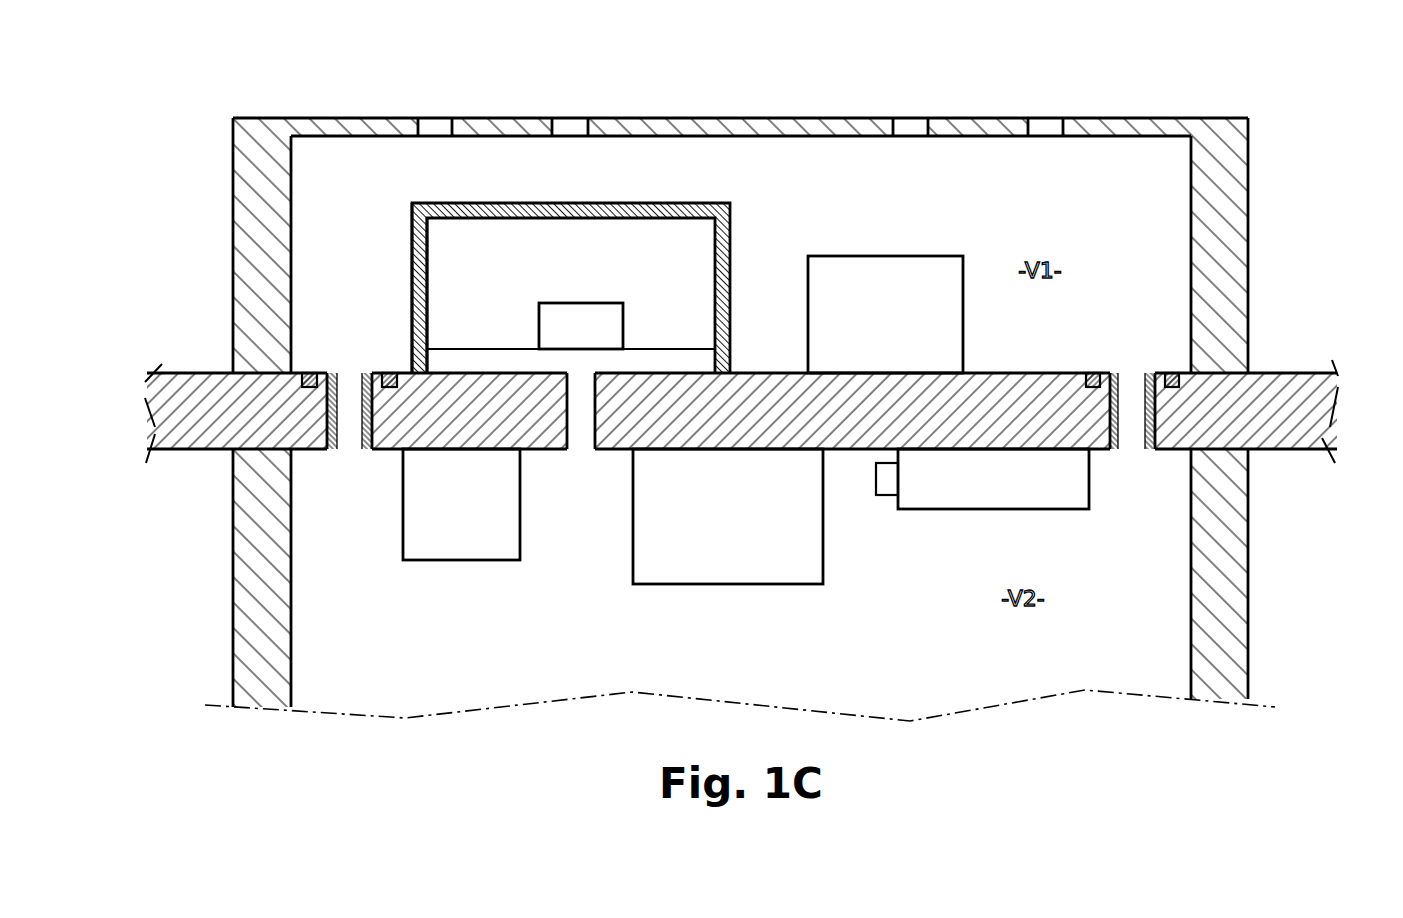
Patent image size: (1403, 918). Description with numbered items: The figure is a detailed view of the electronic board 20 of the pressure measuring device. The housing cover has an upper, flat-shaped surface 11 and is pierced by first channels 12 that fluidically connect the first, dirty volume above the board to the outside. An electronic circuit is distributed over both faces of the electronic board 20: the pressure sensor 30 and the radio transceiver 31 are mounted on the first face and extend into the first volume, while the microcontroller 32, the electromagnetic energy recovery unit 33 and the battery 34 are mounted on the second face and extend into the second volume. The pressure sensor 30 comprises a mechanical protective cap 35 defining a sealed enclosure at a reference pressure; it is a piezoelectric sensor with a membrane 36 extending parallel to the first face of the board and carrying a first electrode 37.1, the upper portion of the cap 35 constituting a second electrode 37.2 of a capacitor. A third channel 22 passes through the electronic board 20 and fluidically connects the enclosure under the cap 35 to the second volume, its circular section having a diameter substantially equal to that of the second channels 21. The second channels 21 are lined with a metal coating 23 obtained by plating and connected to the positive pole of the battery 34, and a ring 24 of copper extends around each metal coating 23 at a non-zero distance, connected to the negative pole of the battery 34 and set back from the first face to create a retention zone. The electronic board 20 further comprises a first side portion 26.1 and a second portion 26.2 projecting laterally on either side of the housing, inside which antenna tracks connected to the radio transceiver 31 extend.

The upper flat-shaped surface 11 is at (790, 121).
The first channels 12 is at (568, 128).
The electronic board 20 is at (1277, 373).
The second channels 21 is at (350, 449).
The third channel 22 is at (581, 449).
The metal coating 23 is at (1171, 373).
The ring 24 is at (1096, 373).
The first side portion 26.1 is at (1313, 373).
The second portion 26.2 is at (200, 373).
The pressure sensor 30 is at (637, 242).
The radio transceiver 31 is at (885, 314).
The microcontroller 32 is at (461, 504).
The electromagnetic energy recovery unit 33 is at (728, 516).
The battery 34 is at (982, 479).
The mechanical protective cap 35 is at (418, 250).
The membrane 36 is at (453, 348).
The first electrode 37.1 is at (581, 326).
The second electrode 37.2 is at (507, 219).